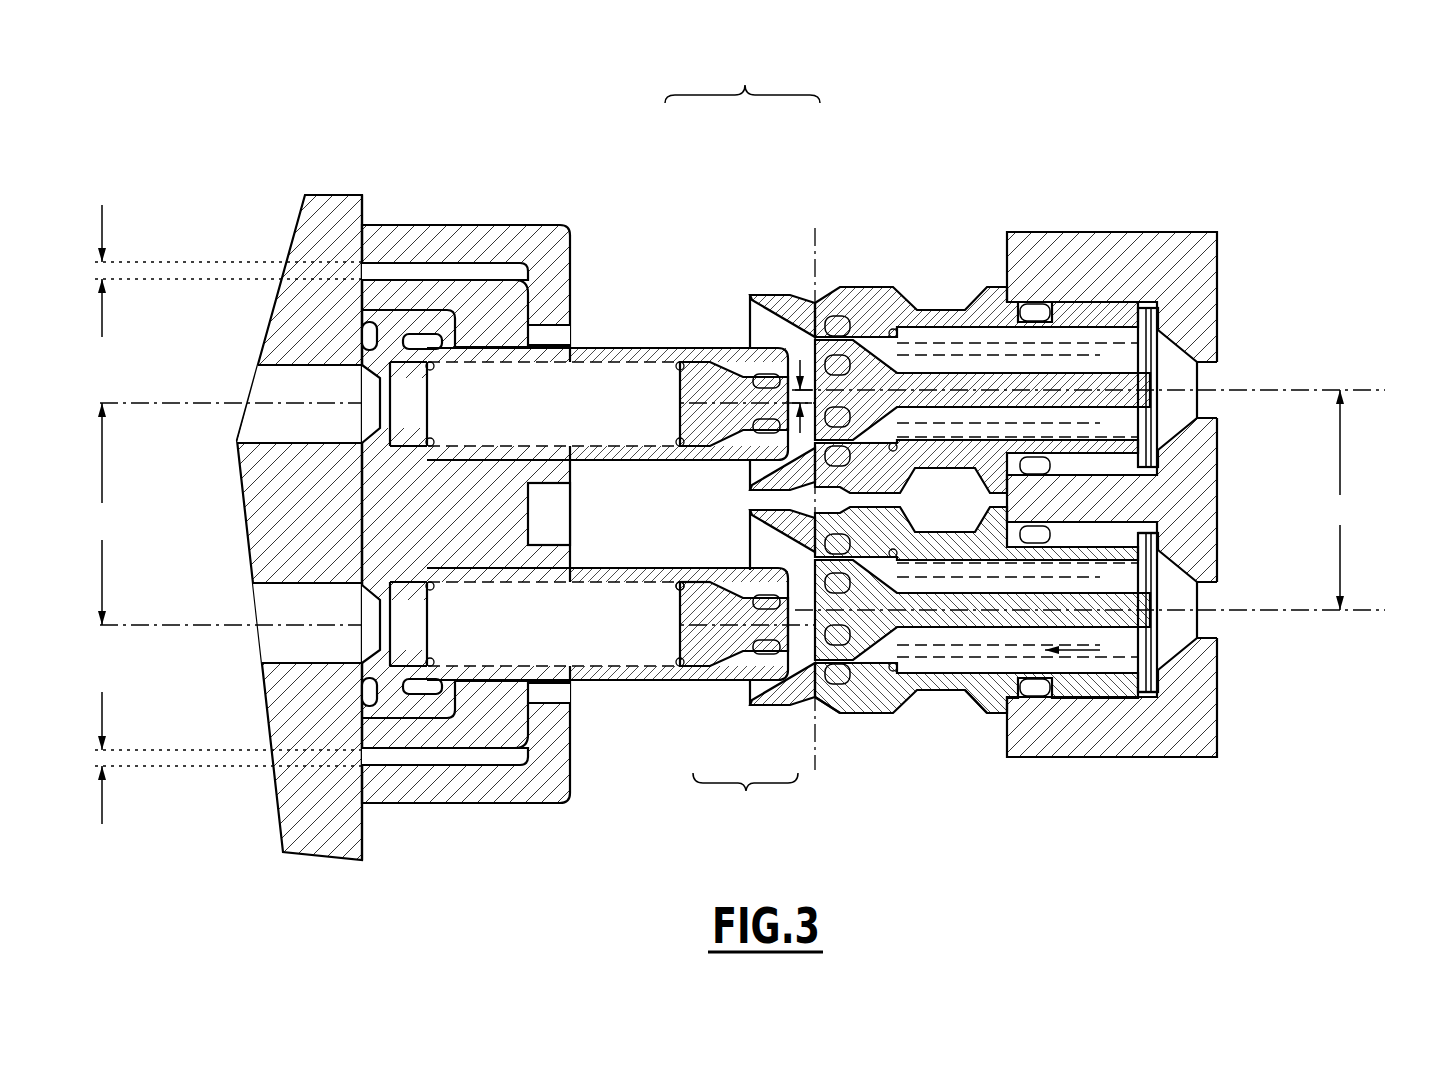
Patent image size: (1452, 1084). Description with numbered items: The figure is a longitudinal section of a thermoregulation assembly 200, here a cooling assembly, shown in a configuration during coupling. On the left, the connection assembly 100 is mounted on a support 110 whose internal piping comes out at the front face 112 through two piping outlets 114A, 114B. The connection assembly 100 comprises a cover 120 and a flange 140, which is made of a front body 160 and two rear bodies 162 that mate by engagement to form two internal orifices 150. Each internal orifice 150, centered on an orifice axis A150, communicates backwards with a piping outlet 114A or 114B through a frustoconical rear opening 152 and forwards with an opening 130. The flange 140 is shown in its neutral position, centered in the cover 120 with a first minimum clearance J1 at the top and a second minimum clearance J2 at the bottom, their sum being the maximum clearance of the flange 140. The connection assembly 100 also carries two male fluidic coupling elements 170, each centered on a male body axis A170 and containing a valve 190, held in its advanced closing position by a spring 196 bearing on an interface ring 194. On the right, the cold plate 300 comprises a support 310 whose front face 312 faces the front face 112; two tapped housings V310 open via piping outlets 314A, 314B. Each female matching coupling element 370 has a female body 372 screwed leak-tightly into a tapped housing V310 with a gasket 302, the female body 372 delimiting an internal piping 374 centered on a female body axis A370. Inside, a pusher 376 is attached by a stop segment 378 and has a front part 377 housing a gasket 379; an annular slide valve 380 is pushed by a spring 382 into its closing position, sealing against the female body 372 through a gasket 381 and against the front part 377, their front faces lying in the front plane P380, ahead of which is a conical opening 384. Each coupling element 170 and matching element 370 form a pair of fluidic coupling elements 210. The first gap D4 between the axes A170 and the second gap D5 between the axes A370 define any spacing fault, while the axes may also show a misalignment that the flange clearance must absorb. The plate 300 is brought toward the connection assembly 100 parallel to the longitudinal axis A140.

The thermoregulation assembly 200 is at (742, 73).
The connection assembly 100 is at (660, 188).
The plate 300 is at (815, 188).
The support 110 is at (318, 209).
The front face 112 is at (368, 202).
The piping outlet 114A is at (285, 387).
The piping outlet 114B is at (297, 647).
The cover 120 is at (450, 240).
The opening 130 is at (548, 483).
The flange 140 is at (500, 310).
The internal orifice 150 is at (365, 607).
The rear opening 152 is at (365, 421).
The front body 160 is at (388, 293).
The rear body 162 is at (360, 318).
The fluidic coupling element 170 is at (712, 685).
The valve 190 is at (690, 614).
The interface ring 194 is at (372, 650).
The spring 196 is at (507, 663).
The pair of fluidic coupling elements 210 is at (745, 797).
The gasket 302 is at (1040, 305).
The support 310 is at (1137, 270).
The front face 312 is at (1005, 238).
The piping outlet 314A is at (1180, 378).
The piping outlet 314B is at (1180, 598).
The matching coupling element 370 is at (780, 697).
The female body 372 is at (988, 693).
The internal piping 374 is at (1160, 657).
The pusher 376 is at (1120, 651).
The front part 377 is at (680, 592).
The stop segment 378 is at (1160, 557).
The gasket 379 is at (848, 690).
The annular slide valve 380 is at (877, 688).
The gasket 381 is at (836, 314).
The spring 382 is at (937, 675).
The conical opening 384 is at (752, 314).
The longitudinal axis A140 is at (452, 400).
The orifice axis A150 is at (558, 402).
The male body axis A170 is at (652, 348).
The female body axis A370 is at (1117, 498).
The front plane P380 is at (815, 481).
The tapped housing V310 is at (1015, 355).
The first gap D4 is at (100, 514).
The second gap D5 is at (1340, 500).
The first minimum clearance J1 is at (298, 271).
The second minimum clearance J2 is at (295, 758).